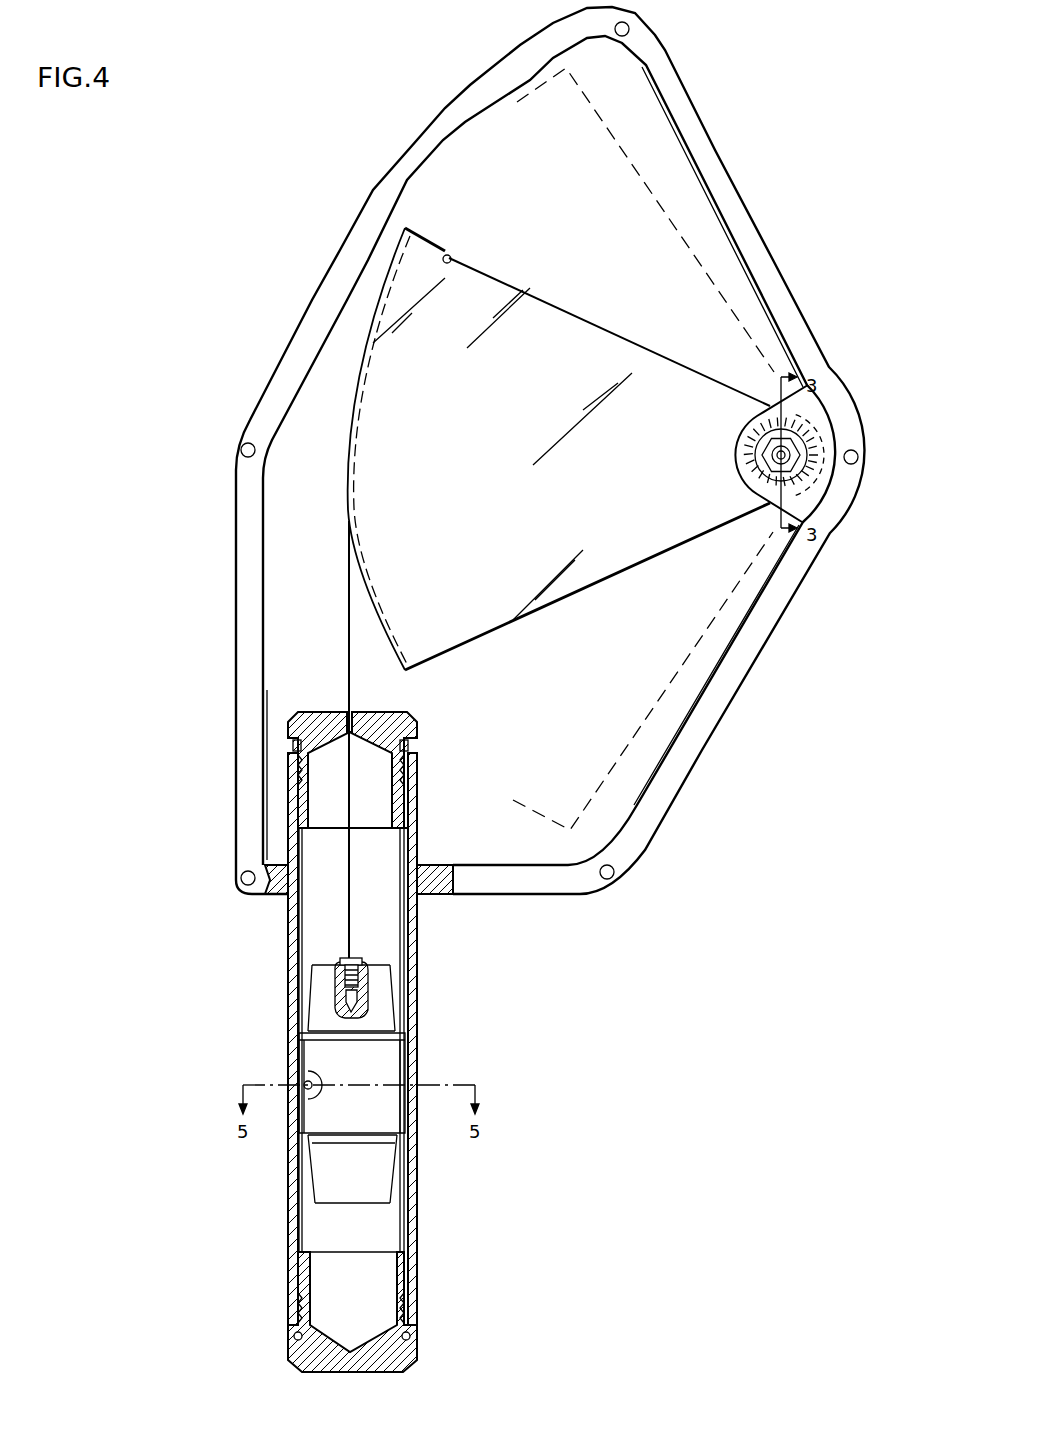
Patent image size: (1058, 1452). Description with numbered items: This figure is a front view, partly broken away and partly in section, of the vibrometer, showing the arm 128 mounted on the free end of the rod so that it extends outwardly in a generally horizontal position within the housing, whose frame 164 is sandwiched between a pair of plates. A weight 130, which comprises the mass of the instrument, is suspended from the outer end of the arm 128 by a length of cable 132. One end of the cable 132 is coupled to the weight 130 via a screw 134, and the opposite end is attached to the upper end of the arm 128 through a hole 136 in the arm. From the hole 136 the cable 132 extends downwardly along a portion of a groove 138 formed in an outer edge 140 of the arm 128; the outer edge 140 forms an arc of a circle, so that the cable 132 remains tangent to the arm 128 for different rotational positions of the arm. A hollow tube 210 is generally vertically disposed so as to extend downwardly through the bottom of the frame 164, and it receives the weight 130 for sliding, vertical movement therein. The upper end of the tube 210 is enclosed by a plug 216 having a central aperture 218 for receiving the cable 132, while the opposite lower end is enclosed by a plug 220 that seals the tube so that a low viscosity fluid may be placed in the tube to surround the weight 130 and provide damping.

The arm 128 is at (660, 541).
The weight 130 is at (392, 1057).
The cable 132 is at (349, 910).
The screw 134 is at (351, 958).
The hole 136 is at (450, 256).
The groove 138 is at (407, 657).
The outer edge 140 is at (391, 655).
The frame 164 is at (682, 762).
The hollow tube 210 is at (417, 1184).
The plug 216 is at (412, 722).
The central aperture 218 is at (348, 712).
The plug 220 is at (412, 1368).